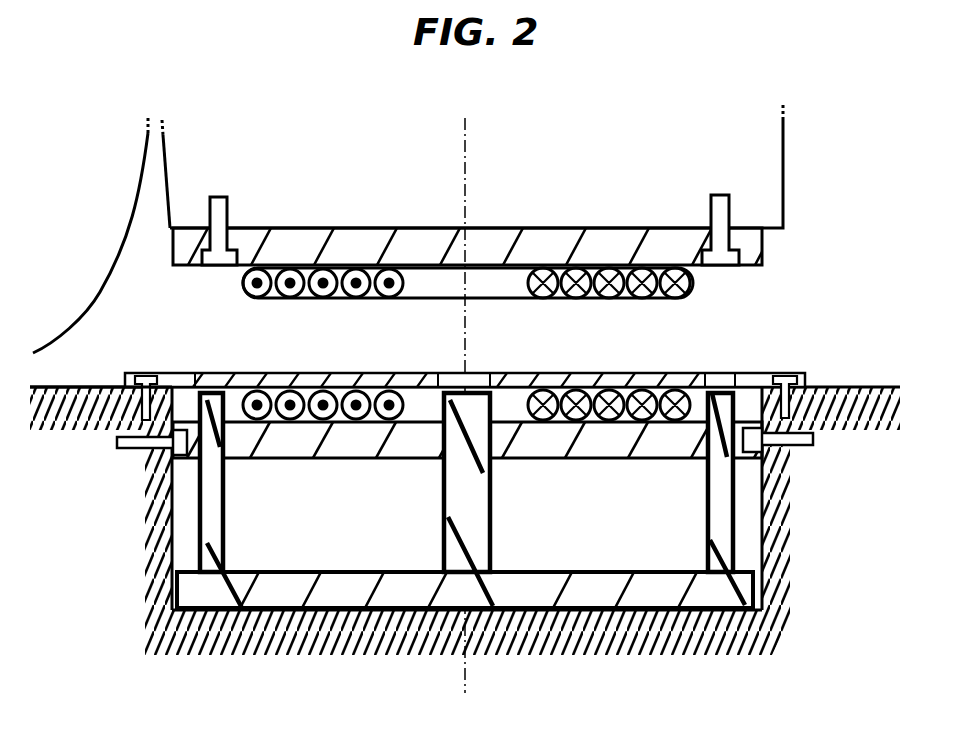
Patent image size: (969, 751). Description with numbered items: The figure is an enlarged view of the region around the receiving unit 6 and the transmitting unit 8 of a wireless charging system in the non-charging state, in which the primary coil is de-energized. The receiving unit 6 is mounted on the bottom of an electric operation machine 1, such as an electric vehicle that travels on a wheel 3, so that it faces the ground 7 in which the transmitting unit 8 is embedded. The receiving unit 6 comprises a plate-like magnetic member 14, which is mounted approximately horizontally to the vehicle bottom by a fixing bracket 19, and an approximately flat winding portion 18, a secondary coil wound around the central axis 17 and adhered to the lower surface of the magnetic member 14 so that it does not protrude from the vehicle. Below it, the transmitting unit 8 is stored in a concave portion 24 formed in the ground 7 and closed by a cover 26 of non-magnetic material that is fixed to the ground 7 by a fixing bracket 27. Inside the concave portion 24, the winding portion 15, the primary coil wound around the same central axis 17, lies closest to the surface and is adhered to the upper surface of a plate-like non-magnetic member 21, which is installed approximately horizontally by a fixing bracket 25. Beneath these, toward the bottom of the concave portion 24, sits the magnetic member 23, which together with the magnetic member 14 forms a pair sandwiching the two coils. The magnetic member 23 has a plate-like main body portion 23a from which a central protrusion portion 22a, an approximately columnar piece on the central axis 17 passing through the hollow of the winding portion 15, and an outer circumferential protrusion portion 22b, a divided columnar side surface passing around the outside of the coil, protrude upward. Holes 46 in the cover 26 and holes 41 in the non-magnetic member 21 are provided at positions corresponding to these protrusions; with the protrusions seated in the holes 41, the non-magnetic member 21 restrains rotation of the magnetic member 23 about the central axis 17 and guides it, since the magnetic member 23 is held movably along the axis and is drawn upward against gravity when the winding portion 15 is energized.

The electric operation machine 1 is at (785, 152).
The wheel 3 is at (120, 268).
The receiving unit 6 is at (796, 237).
The ground 7 is at (63, 387).
The transmitting unit 8 is at (812, 497).
The magnetic member 14 is at (620, 238).
The winding portion 15 is at (357, 390).
The central axis 17 is at (465, 155).
The winding portion 18 is at (388, 302).
The fixing bracket 19 is at (212, 195).
The non-magnetic member 21 is at (538, 462).
The central protrusion portion 22a is at (444, 562).
The outer circumferential protrusion portion 22b is at (226, 562).
The magnetic member 23 is at (575, 590).
The main body portion 23a is at (328, 572).
The concave portion 24 is at (772, 560).
The fixing bracket 25 is at (127, 443).
The cover 26 is at (550, 388).
The fixing bracket 27 is at (147, 373).
The holes 41 is at (227, 480).
The holes 46 is at (225, 373).